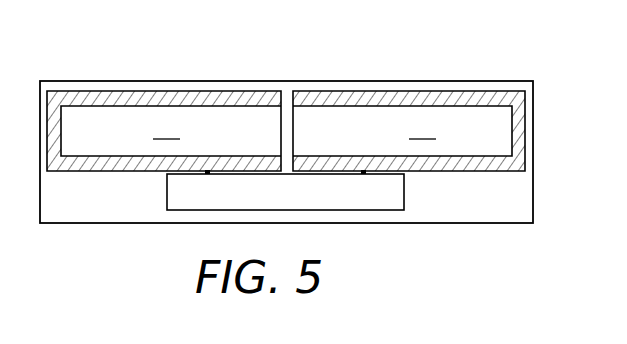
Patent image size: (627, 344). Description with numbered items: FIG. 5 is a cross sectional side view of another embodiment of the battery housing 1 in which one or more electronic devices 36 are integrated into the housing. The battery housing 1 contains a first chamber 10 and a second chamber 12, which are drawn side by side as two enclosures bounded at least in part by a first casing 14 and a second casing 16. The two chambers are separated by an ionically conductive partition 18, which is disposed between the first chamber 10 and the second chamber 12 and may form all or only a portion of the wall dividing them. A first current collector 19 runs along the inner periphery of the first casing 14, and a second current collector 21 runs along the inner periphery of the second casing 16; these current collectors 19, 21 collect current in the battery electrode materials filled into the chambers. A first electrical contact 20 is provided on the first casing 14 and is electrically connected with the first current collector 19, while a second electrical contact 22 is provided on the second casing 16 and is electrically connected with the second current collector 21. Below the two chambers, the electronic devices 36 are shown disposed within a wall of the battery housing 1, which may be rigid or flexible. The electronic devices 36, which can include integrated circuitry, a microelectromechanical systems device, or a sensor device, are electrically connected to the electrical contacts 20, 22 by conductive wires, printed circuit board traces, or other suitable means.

The battery housing 1 is at (147, 45).
The first chamber 10 is at (166, 129).
The second chamber 12 is at (422, 129).
The first casing 14 is at (44, 113).
The second casing 16 is at (528, 104).
The ionically conductive partition 18 is at (287, 122).
The first current collector 19 is at (89, 158).
The first electrical contact 20 is at (207, 175).
The second current collector 21 is at (483, 158).
The second electrical contact 22 is at (366, 174).
The electronic devices 36 is at (362, 193).